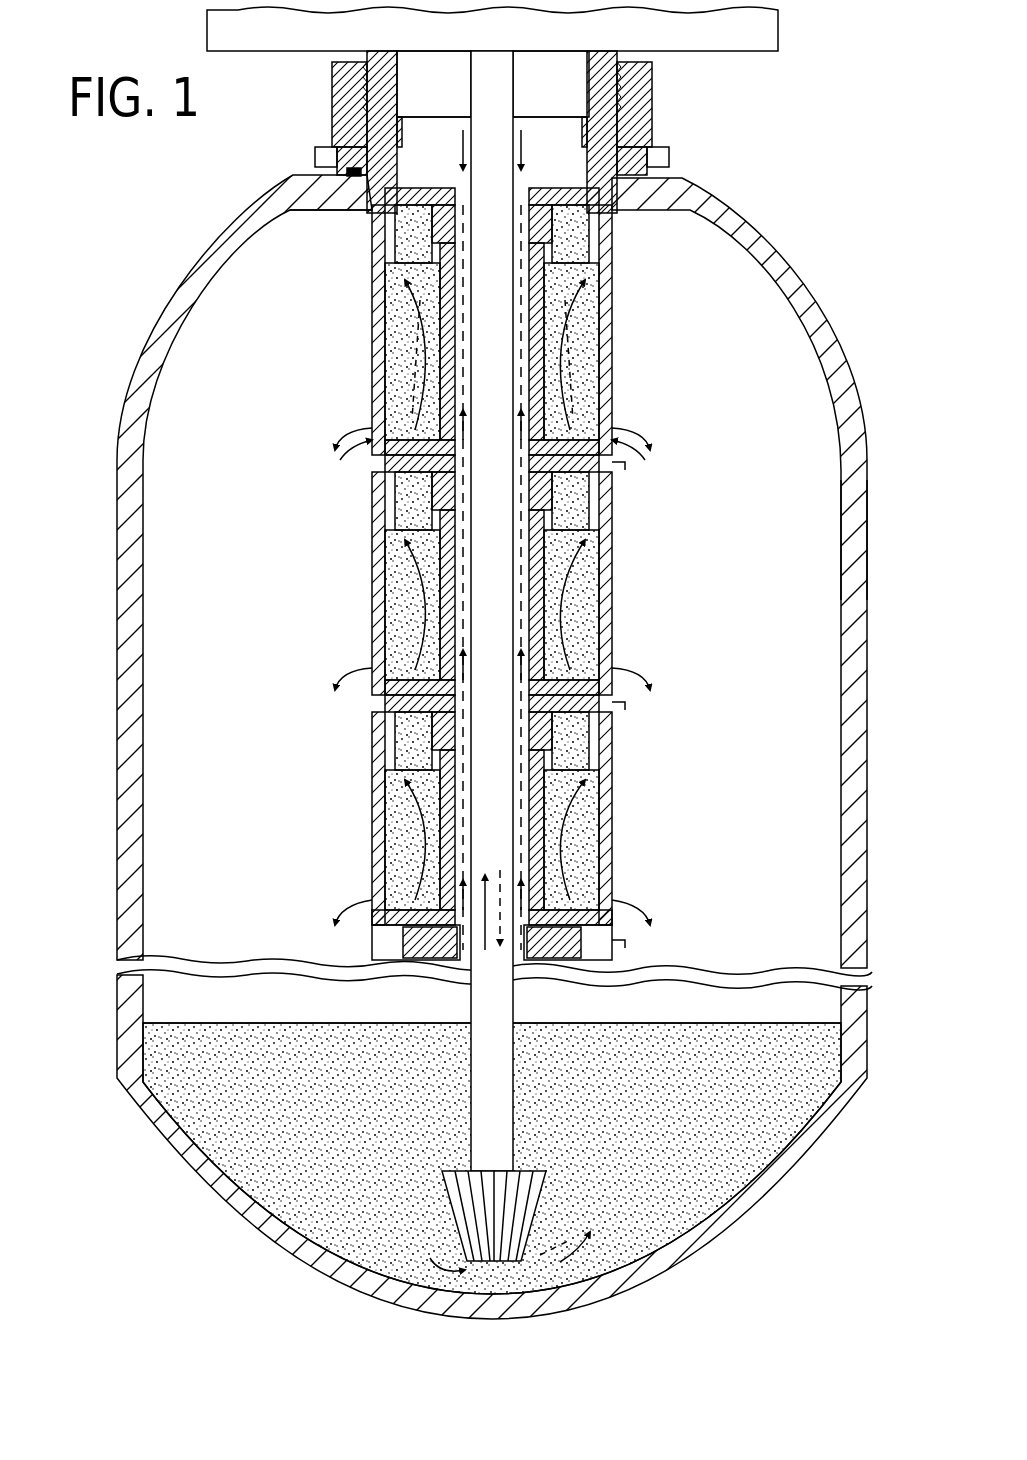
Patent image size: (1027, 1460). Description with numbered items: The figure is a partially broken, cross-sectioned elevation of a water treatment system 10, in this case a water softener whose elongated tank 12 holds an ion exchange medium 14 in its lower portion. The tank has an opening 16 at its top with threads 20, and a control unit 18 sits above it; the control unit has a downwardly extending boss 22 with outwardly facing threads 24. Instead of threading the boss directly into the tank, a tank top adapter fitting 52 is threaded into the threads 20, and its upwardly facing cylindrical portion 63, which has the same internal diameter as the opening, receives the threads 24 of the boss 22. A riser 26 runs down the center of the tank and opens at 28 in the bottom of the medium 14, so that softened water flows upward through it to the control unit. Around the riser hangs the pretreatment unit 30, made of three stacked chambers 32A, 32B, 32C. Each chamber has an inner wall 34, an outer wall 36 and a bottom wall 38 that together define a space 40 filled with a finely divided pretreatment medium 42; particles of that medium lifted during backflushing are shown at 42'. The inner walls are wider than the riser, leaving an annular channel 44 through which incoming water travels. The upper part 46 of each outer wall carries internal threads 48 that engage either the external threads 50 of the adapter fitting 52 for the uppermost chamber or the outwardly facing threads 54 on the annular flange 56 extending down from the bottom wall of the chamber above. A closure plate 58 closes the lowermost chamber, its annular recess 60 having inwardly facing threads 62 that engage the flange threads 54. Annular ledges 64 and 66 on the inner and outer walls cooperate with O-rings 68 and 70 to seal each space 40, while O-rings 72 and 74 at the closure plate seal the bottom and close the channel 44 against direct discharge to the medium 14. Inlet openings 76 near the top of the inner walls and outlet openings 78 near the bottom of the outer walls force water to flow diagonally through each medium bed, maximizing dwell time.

The water treatment system 10 is at (762, 215).
The water softener tank 12 is at (850, 540).
The ion exchange media 14 is at (606, 1141).
The opening 16 is at (375, 205).
The control unit 18 is at (755, 35).
The threads 20 is at (362, 182).
The boss 22 is at (390, 110).
The outwardly facing threads 24 is at (655, 88).
The riser 26 is at (470, 1104).
The riser bottom opening 28 is at (520, 1268).
The pretreatment unit 30 is at (645, 558).
The uppermost chamber 32A is at (615, 340).
The middle chamber 32B is at (615, 620).
The lowermost chamber 32C is at (615, 825).
The inner wall 34 is at (452, 388).
The outer wall 36 is at (372, 340).
The bottom wall 38 is at (385, 455).
The space 40 is at (385, 372).
The pretreatment water treatment medium 42 is at (650, 553).
The lifted pretreatment medium particles 42' is at (643, 279).
The annular channel 44 is at (462, 465).
The upper part of outer wall 46 is at (375, 228).
The internal threads 48 is at (395, 215).
The external threads 50 is at (382, 245).
The tank top adapter fitting 52 is at (665, 125).
The outwardly facing threads 54 is at (620, 470).
The annular flange 56 is at (620, 505).
The closure plate 58 is at (560, 965).
The annular recess 60 is at (430, 975).
The inwardly facing threads 62 is at (405, 968).
The cylindrical portion 63 is at (660, 118).
The annular ledge 64 is at (535, 240).
The annular ledge 66 is at (385, 270).
The O-ring 68 is at (540, 215).
The O-ring 70 is at (600, 245).
The O-ring 72 is at (625, 930).
The O-ring 74 is at (520, 985).
The inlet openings 76 is at (530, 295).
The outlet openings 78 is at (372, 408).